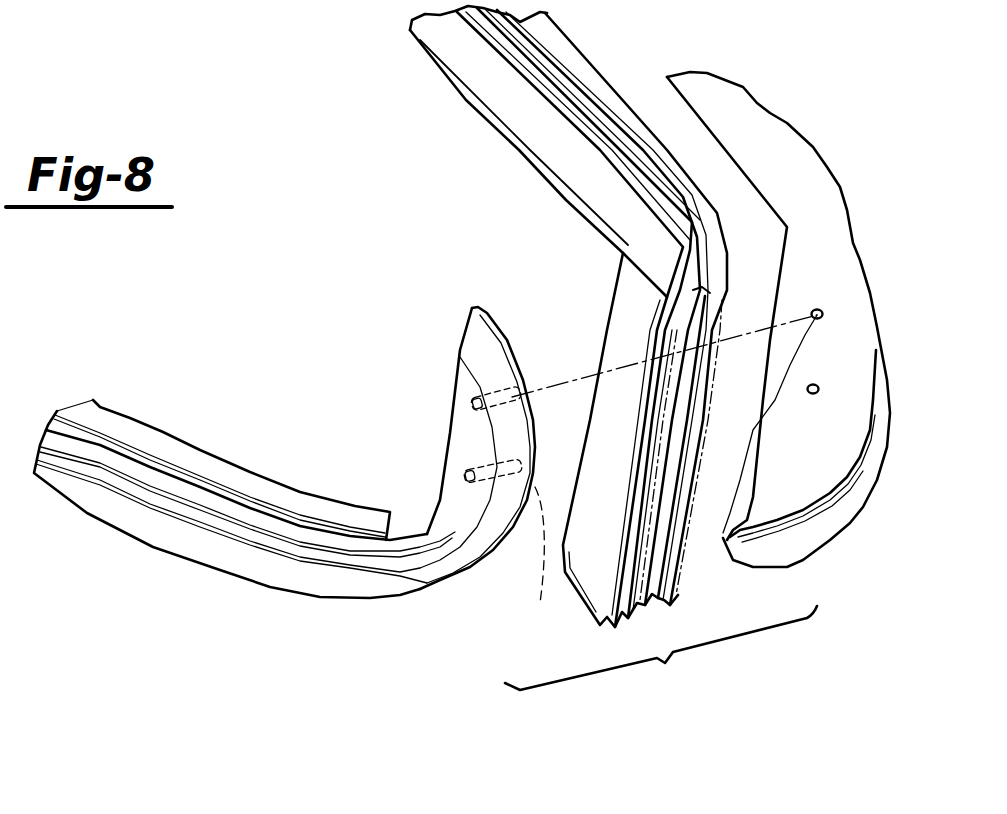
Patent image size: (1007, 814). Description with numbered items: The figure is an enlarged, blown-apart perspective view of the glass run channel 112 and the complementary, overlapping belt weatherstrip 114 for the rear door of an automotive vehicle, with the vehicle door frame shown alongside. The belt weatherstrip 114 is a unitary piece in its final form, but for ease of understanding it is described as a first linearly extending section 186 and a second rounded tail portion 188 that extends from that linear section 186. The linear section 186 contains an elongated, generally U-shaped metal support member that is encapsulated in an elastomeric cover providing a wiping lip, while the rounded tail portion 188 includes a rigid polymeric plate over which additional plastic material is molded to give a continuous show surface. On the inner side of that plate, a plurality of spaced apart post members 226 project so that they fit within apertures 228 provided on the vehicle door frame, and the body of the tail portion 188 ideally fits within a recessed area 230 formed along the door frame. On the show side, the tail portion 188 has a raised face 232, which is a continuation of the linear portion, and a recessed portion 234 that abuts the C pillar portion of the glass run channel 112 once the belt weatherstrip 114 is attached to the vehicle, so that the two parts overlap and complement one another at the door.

The glass run channel 112 is at (533, 115).
The belt weatherstrip 114 is at (260, 387).
The first linearly extending section 186 is at (163, 371).
The second rounded tail portion 188 is at (560, 293).
The post members 226 is at (534, 564).
The apertures 228 is at (707, 550).
The recessed area 230 is at (763, 524).
The raised face 232 is at (453, 567).
The recessed portion 234 is at (463, 437).